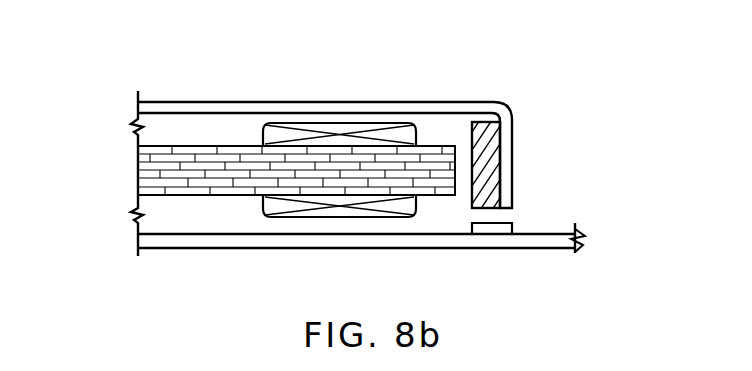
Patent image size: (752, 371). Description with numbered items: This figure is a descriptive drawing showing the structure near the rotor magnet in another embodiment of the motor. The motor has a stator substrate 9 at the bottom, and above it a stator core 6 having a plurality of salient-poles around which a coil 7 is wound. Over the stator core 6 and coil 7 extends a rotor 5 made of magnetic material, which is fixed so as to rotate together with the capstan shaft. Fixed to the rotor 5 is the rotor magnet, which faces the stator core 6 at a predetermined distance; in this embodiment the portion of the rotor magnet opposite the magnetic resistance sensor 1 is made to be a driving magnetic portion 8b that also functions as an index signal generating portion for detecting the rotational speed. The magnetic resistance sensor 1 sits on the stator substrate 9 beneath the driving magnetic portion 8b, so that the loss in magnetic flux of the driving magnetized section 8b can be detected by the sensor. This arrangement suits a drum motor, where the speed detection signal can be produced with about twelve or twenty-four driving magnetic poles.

The magnetic resistance sensor 1 is at (487, 229).
The rotor 5 is at (431, 104).
The stator core 6 is at (165, 171).
The coil 7 is at (277, 205).
The driving magnetic portion 8b is at (489, 170).
The stator substrate 9 is at (545, 236).